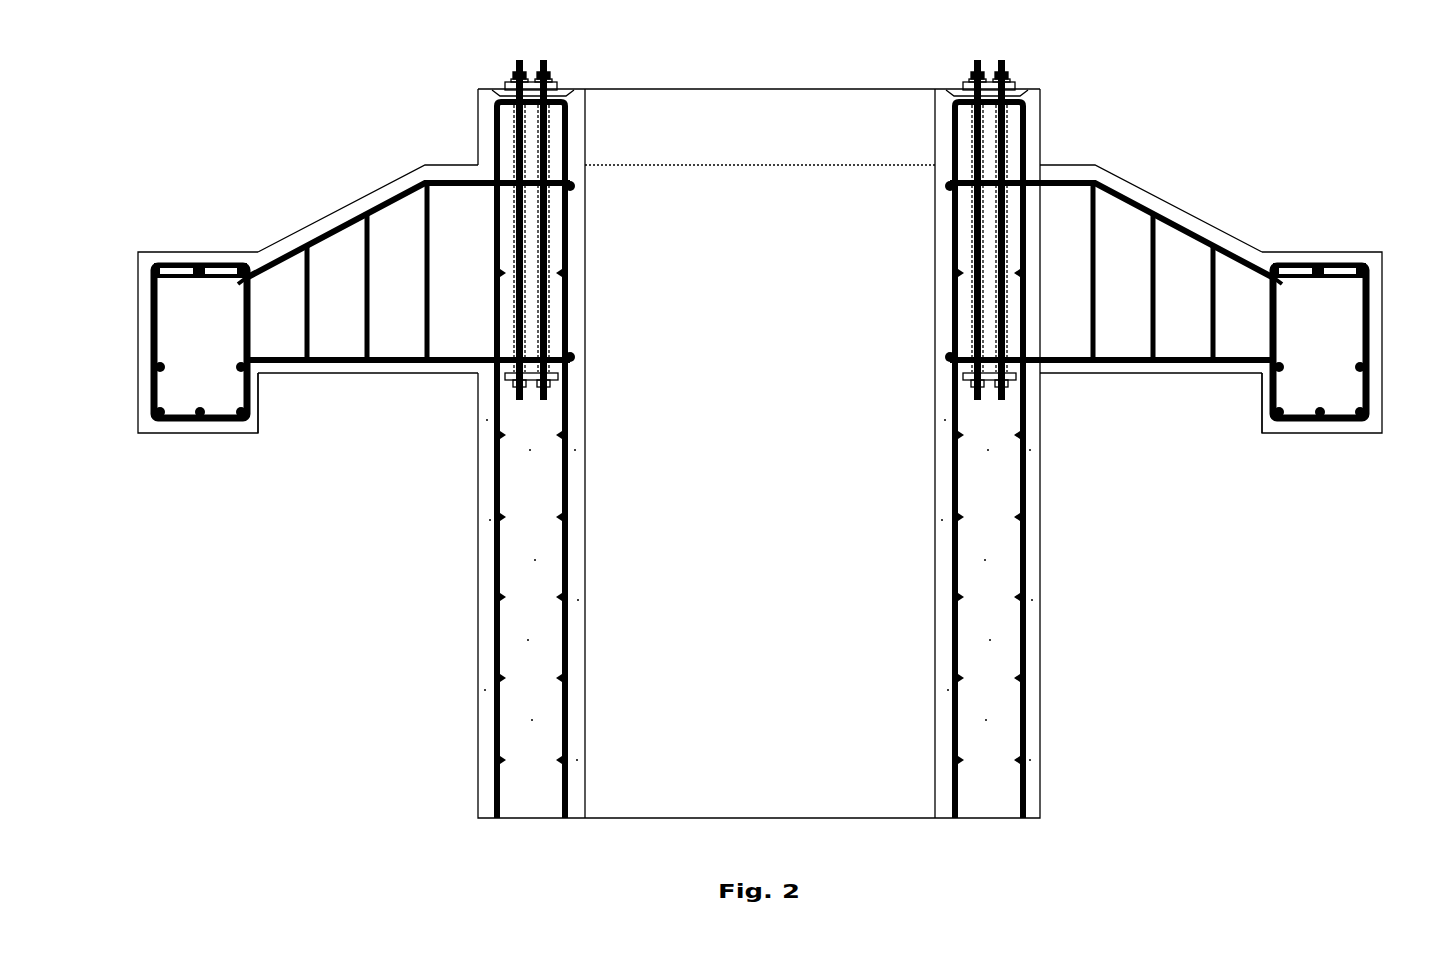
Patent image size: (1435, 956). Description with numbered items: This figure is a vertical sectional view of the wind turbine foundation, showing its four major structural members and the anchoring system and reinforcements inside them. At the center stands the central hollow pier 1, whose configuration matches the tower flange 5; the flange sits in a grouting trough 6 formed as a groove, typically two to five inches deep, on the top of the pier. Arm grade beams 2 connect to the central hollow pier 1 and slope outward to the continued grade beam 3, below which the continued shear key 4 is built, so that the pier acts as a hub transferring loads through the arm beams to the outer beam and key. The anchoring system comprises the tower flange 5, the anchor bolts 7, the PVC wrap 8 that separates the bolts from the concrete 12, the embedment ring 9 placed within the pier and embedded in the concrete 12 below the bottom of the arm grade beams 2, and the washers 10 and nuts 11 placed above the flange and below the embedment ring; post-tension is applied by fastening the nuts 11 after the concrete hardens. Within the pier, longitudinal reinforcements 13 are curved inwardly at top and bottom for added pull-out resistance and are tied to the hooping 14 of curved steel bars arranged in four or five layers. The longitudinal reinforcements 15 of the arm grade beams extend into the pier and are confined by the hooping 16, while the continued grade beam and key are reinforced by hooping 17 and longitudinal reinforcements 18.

The central hollow pier 1 is at (585, 472).
The arm grade beams 2 is at (388, 181).
The continued grade beam 3 is at (180, 250).
The continued shear key 4 is at (335, 443).
The tower flange 5 is at (507, 80).
The grouting trough 6 is at (497, 90).
The anchor bolts 7 is at (552, 65).
The PVC wrap 8 is at (551, 250).
The embedment ring 9 is at (561, 378).
The washers 10 is at (1011, 82).
The nuts 11 is at (1006, 71).
The concrete 12 is at (580, 315).
The longitudinal reinforcements of central hollow pier 13 is at (571, 556).
The hooping of central hollow pier 14 is at (568, 679).
The longitudinal reinforcements of arm grade beams 15 is at (1169, 217).
The hooping of arm grade beams 16 is at (1208, 341).
The hooping of continued grade beam and key 17 is at (181, 421).
The longitudinal reinforcements of continued grade beam and key 18 is at (1319, 424).